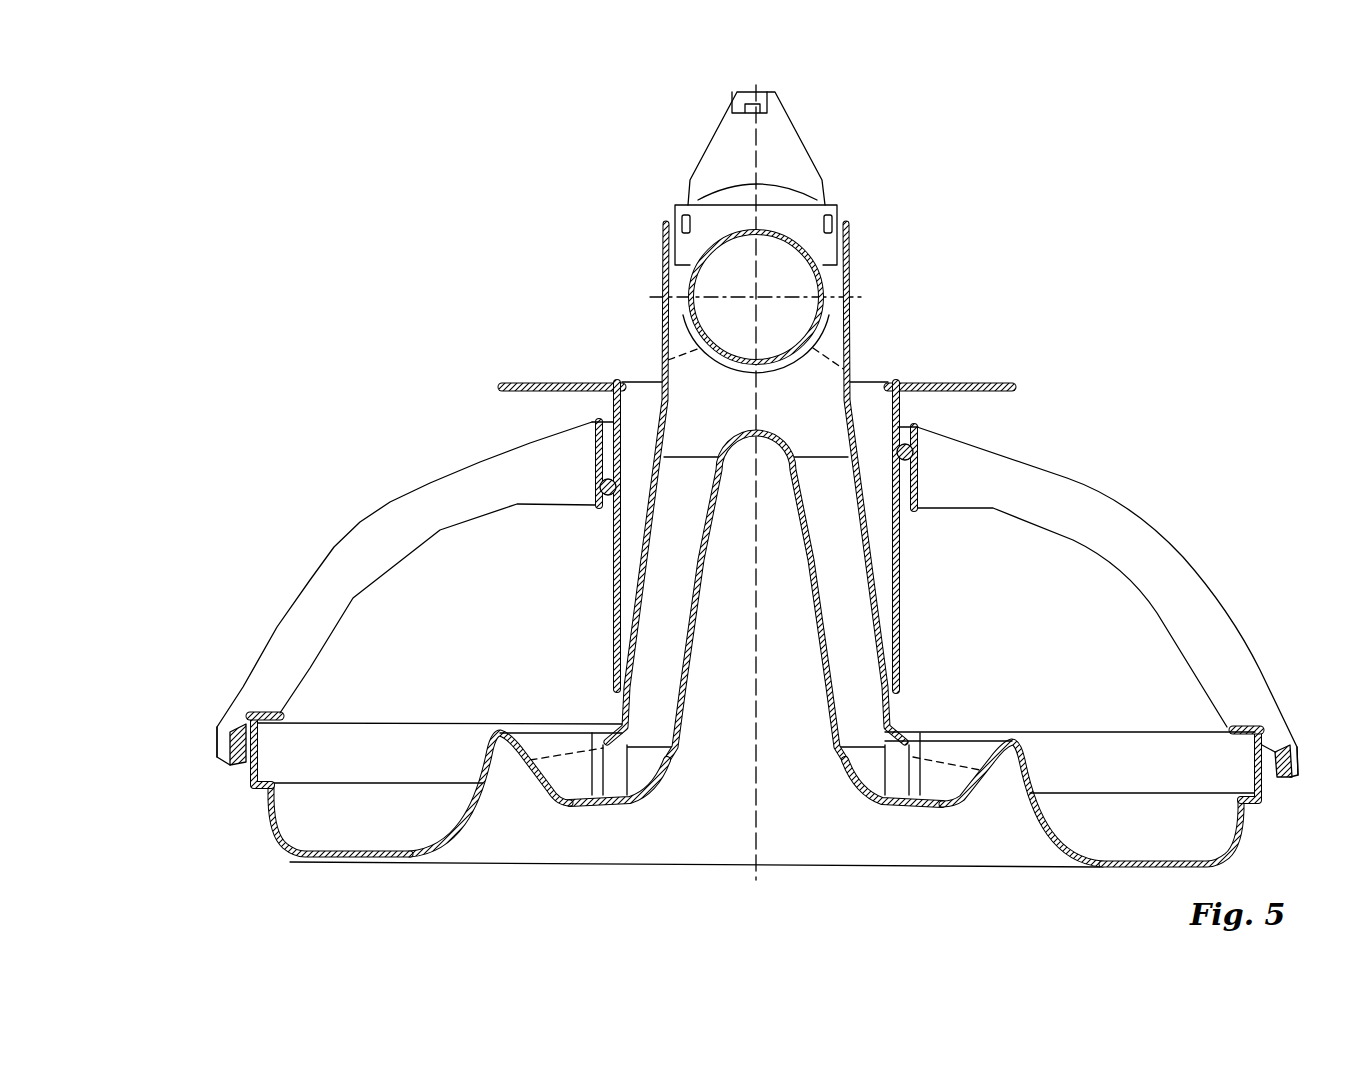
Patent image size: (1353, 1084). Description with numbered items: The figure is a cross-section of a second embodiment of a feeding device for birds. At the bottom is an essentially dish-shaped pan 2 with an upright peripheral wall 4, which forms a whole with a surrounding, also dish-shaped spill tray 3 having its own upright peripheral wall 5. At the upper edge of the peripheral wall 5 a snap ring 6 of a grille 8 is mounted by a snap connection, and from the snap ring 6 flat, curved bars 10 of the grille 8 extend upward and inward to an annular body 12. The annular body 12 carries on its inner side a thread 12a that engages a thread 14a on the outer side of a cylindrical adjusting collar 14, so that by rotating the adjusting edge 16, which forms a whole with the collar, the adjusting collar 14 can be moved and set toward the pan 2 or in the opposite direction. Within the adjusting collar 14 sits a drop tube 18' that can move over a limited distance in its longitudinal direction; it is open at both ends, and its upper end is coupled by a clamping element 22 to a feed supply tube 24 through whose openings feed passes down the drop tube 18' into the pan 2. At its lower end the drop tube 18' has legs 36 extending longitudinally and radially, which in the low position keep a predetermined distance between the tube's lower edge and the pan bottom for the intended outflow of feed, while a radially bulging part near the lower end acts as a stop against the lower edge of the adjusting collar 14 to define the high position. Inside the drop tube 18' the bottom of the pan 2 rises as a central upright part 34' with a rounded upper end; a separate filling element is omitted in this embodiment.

The dish-shaped pan 2 is at (588, 807).
The spill tray 3 is at (377, 862).
The upright peripheral wall 4 is at (497, 740).
The upright peripheral wall 5 is at (268, 800).
The snap ring 6 is at (222, 752).
The grille 8 is at (357, 495).
The bars 10 is at (1080, 516).
The annular body 12 is at (916, 508).
The thread 12a is at (917, 446).
The adjusting collar 14 is at (900, 600).
The thread 14a is at (600, 508).
The adjusting edge 16 is at (605, 382).
The drop tube 18' is at (787, 509).
The clamping element 22 is at (790, 144).
The feed supply tube 24 is at (672, 305).
The central upright part 34' is at (823, 596).
The legs 36 is at (908, 765).